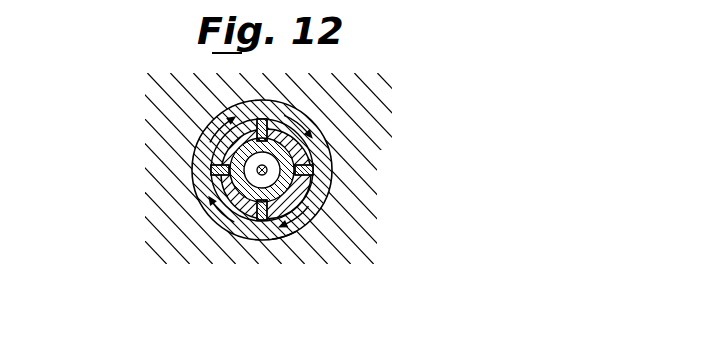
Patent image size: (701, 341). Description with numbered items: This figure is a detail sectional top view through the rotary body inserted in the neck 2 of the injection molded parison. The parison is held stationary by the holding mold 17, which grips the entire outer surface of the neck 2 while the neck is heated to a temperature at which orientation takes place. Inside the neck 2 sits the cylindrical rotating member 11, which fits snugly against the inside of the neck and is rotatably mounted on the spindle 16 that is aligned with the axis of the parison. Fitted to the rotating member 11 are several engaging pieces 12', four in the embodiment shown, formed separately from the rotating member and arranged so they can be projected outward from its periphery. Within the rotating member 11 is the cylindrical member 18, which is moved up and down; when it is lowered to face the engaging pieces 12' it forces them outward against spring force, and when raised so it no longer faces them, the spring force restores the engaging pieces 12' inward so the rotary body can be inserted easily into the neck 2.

The holding mold 17 is at (363, 105).
The neck 2 is at (318, 150).
The rotating member 11 is at (225, 154).
The engaging pieces 12' is at (257, 169).
The spindle 16 is at (257, 176).
The cylindrical member 18 is at (284, 241).